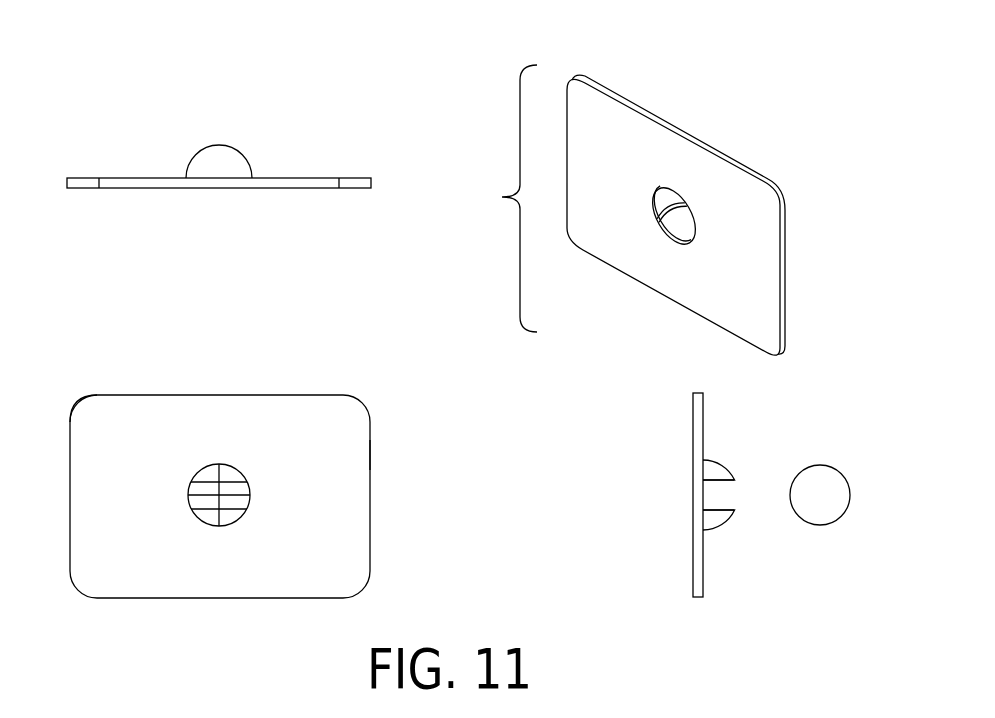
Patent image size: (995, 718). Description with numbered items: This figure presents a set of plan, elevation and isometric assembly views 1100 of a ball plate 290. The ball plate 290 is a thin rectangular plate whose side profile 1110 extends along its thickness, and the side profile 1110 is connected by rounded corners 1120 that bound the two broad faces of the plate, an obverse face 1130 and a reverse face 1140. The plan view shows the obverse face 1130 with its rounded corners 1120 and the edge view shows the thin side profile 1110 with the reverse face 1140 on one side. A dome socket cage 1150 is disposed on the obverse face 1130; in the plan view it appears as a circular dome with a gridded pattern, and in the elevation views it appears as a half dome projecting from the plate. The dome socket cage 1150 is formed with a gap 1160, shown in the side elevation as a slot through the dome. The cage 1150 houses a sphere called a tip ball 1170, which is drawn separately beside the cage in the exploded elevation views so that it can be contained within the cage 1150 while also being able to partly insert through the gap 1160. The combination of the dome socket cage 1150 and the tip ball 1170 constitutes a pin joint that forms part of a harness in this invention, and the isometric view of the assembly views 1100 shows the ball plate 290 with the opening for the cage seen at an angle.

The assembly views 1100 is at (727, 85).
The ball plate 290 is at (493, 198).
The side profile 1110 is at (377, 467).
The rounded corners 1120 is at (365, 400).
The obverse face 1130 is at (273, 190).
The reverse face 1140 is at (132, 172).
The dome socket cage 1150 is at (230, 467).
The gap 1160 is at (187, 477).
The tip ball 1170 is at (244, 156).